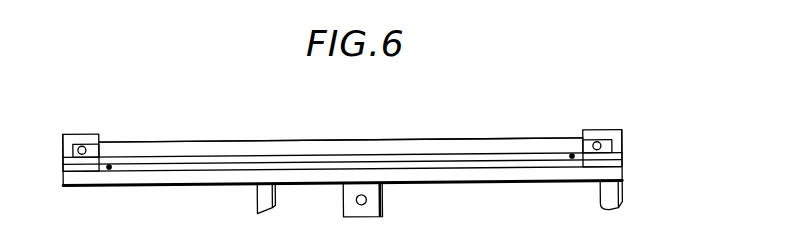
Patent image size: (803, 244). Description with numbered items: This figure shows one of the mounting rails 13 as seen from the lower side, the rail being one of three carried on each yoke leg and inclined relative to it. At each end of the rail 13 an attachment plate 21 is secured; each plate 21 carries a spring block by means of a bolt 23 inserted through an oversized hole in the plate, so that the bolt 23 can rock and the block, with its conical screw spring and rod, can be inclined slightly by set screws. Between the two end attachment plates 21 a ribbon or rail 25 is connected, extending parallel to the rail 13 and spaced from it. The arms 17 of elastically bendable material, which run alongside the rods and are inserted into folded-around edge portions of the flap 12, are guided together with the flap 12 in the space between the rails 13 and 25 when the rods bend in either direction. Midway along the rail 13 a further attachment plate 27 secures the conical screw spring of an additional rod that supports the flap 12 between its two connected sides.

The flap 12 is at (268, 162).
The mounting rail 13 is at (457, 177).
The arm 17 is at (110, 164).
The attachment plate 21 is at (71, 133).
The bolt 23 is at (85, 146).
The ribbon or rail 25 is at (403, 150).
The attachment plate 27 is at (355, 218).